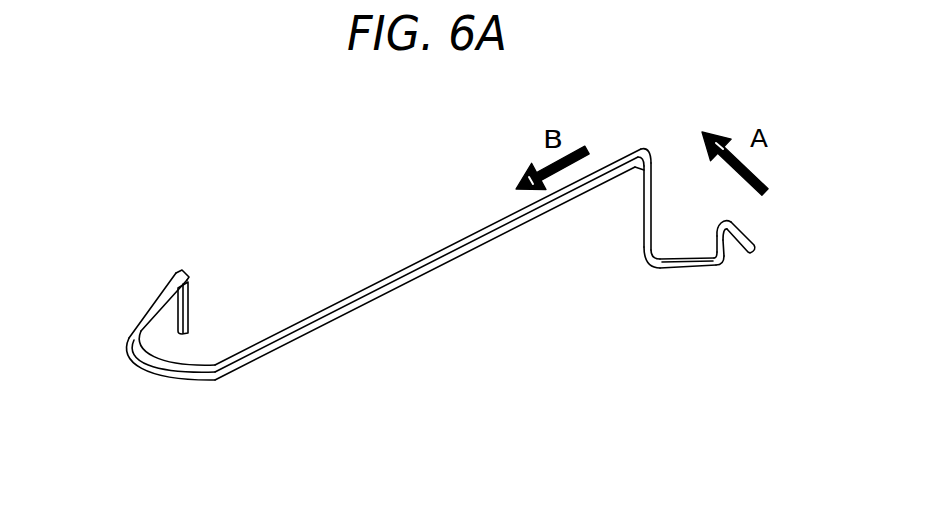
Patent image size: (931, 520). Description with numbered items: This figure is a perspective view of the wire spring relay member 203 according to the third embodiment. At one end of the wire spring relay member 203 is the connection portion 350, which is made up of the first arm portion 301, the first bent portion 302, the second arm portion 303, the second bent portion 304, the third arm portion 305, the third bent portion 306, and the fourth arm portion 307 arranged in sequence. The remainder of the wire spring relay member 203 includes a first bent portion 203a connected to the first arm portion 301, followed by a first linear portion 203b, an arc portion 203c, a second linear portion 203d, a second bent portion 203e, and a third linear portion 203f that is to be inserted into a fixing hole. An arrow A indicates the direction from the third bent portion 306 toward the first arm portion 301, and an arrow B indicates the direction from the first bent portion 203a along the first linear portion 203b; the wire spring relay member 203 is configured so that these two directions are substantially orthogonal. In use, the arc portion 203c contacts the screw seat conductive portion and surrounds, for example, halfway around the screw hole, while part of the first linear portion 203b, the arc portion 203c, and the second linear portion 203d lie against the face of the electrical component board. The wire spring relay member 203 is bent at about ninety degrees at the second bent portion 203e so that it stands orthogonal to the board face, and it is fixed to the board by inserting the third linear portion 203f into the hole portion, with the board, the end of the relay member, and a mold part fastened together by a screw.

The wire spring relay member 203 is at (337, 186).
The first bent portion 203a is at (646, 152).
The first linear portion 203b is at (430, 258).
The arc portion 203c is at (187, 397).
The second linear portion 203d is at (148, 312).
The second bent portion 203e is at (184, 270).
The third linear portion 203f is at (190, 304).
The first arm portion 301 is at (643, 233).
The first bent portion 302 is at (643, 266).
The second arm portion 303 is at (682, 270).
The second bent portion 304 is at (717, 265).
The third arm portion 305 is at (717, 240).
The third bent portion 306 is at (717, 228).
The fourth arm portion 307 is at (745, 237).
The connection portion 350 is at (645, 319).